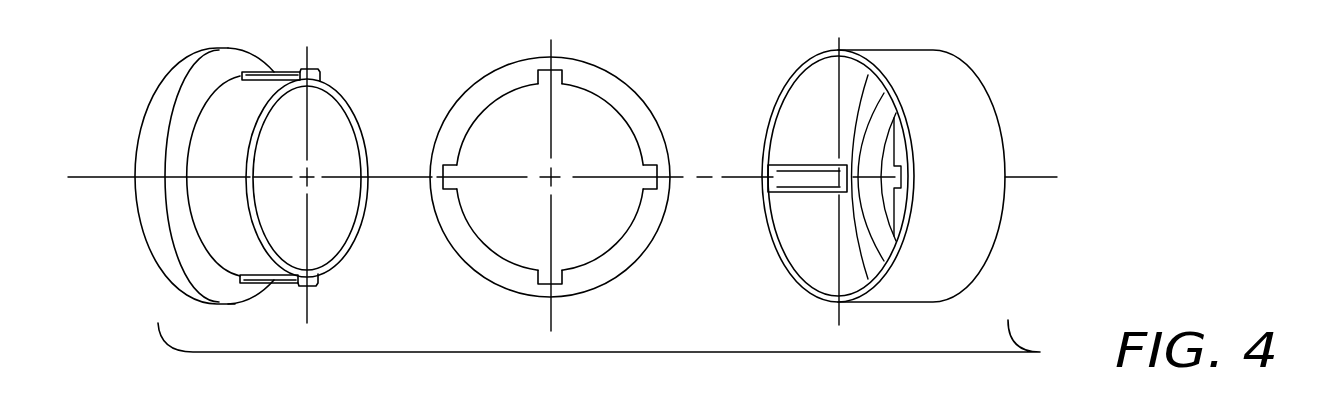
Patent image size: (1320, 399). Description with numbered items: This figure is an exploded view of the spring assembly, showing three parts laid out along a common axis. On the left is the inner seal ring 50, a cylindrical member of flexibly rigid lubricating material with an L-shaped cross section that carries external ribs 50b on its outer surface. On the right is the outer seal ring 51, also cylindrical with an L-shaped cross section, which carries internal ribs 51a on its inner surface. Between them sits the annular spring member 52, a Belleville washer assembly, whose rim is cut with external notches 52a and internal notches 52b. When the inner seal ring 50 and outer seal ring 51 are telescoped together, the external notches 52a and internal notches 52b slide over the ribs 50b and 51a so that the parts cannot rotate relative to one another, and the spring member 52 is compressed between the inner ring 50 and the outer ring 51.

The inner seal ring 50 is at (143, 110).
The external ribs 50b is at (312, 282).
The outer seal ring 51 is at (871, 176).
The internal ribs 51a is at (793, 192).
The annular spring member 52 is at (589, 186).
The external notches 52a is at (672, 172).
The internal notches 52b is at (552, 278).